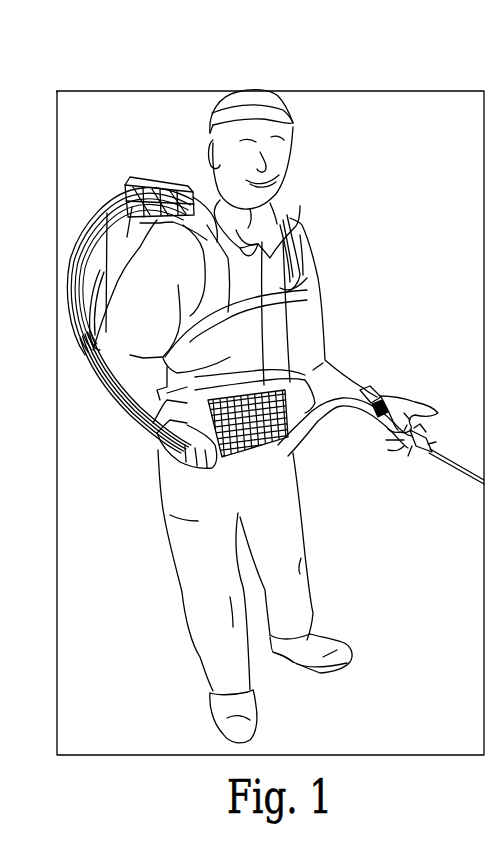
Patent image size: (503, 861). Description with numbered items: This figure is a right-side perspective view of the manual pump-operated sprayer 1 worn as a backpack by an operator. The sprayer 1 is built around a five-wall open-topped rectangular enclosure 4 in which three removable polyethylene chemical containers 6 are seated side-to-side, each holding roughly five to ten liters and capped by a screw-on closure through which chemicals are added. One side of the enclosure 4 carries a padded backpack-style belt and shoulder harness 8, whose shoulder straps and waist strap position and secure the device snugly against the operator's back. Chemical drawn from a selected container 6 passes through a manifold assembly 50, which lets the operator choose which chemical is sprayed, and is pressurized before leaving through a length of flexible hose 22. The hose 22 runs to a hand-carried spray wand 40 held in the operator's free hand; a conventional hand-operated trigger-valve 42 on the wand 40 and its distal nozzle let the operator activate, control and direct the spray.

The manual pump-operated sprayer 1 is at (84, 78).
The rectangular enclosure 4 is at (133, 255).
The chemical containers 6 is at (137, 187).
The belt and shoulder harness 8 is at (232, 225).
The flexible hose 22 is at (87, 360).
The manifold assembly 50 is at (297, 452).
The trigger-valve 42 is at (411, 450).
The spray wand 40 is at (454, 465).